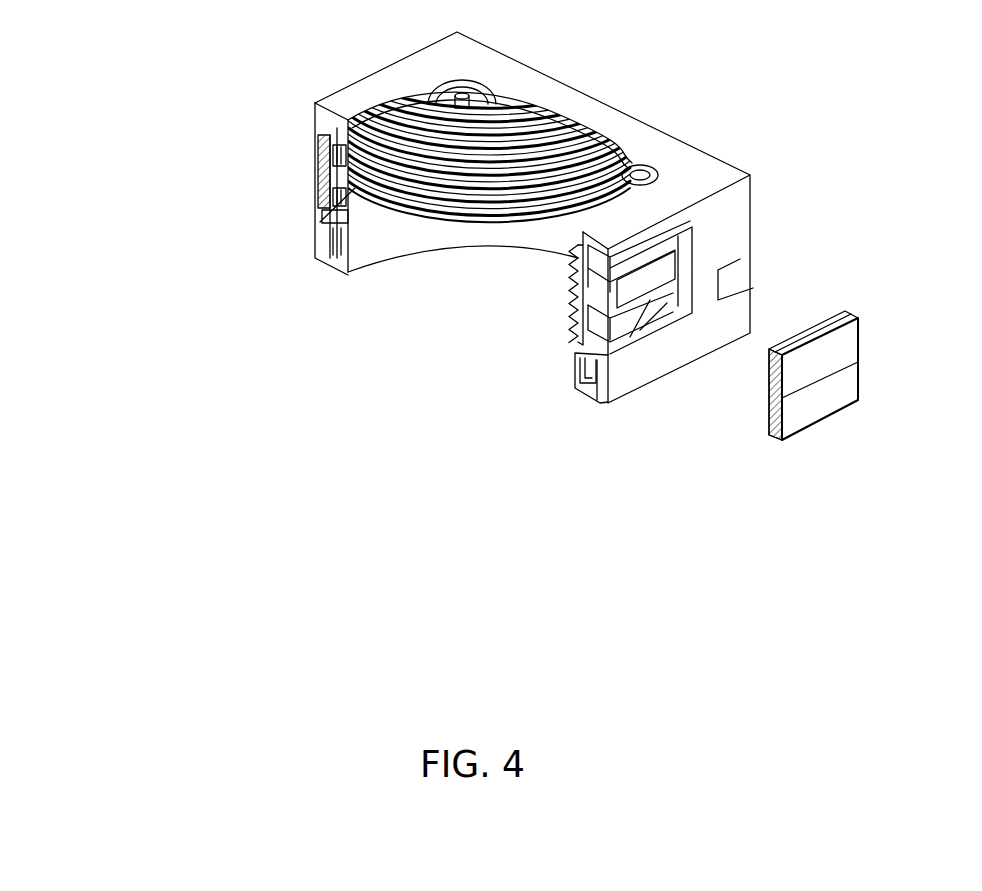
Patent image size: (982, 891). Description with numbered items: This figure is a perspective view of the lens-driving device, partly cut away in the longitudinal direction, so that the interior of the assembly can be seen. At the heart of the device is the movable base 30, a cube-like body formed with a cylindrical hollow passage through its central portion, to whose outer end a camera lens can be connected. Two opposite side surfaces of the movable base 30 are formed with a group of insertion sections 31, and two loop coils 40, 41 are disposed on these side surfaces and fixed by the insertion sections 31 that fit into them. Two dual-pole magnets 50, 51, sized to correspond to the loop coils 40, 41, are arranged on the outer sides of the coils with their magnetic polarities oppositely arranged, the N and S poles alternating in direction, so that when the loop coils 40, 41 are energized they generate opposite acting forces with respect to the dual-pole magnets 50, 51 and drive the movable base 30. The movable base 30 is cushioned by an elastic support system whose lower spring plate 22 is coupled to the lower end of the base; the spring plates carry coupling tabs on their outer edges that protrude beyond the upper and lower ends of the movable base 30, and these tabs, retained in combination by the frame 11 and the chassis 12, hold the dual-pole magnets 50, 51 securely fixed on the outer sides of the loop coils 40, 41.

The frame 11 is at (717, 172).
The chassis 12 is at (733, 305).
The lower spring plate 22 is at (598, 412).
The movable base 30 is at (440, 238).
The insertion sections 31 is at (632, 288).
The loop coil 40 is at (570, 350).
The loop coil 41 is at (320, 210).
The dual-pole magnet 50 is at (803, 440).
The dual-pole magnet 51 is at (318, 163).